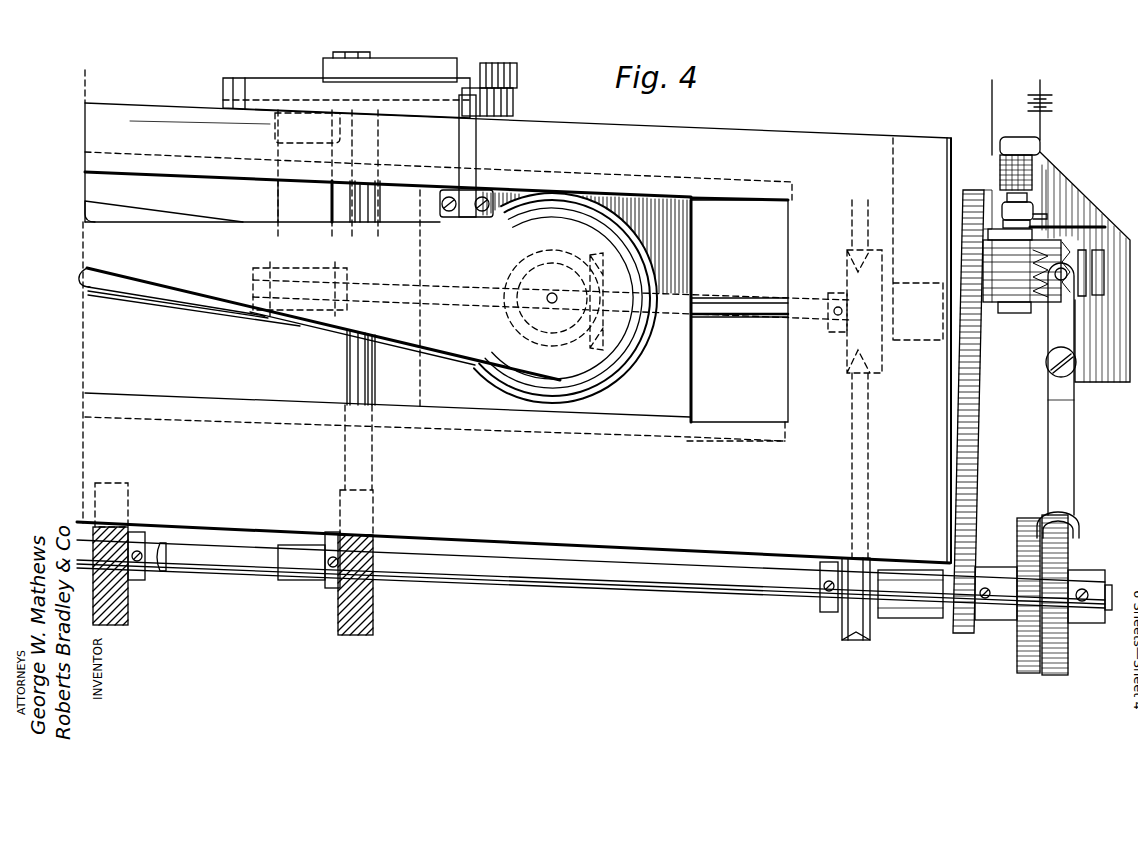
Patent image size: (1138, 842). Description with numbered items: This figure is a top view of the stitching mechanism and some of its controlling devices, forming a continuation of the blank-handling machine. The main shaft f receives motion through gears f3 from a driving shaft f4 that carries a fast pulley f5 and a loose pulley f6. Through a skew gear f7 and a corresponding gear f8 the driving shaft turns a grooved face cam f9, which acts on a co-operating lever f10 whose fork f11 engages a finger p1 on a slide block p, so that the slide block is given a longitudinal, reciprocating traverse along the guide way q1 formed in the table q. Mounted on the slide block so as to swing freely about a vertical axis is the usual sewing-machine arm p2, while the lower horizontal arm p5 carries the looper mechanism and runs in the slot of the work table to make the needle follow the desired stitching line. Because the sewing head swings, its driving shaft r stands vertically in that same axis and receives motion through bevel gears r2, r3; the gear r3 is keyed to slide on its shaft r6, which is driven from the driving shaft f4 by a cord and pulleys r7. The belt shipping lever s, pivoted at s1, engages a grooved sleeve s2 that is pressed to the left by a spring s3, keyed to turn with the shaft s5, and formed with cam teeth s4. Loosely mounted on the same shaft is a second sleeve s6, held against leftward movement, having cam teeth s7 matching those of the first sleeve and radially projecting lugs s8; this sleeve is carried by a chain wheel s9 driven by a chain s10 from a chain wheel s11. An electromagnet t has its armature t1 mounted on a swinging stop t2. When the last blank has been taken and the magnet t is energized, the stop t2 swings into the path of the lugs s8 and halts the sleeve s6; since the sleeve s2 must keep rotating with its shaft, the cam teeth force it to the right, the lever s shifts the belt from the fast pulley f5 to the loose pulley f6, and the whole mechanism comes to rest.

The main shaft f is at (161, 573).
The gears f3 is at (120, 626).
The driving shaft f4 is at (543, 584).
The fast pulley f5 is at (1050, 670).
The loose pulley f6 is at (1017, 660).
The skew gear f7 is at (375, 612).
The corresponding gear f8 is at (291, 582).
The grooved face cam f9 is at (284, 78).
The lever f10 is at (428, 66).
The fork f11 is at (488, 68).
The slide block p is at (739, 310).
The finger p1 is at (479, 130).
The arm p2 is at (696, 343).
The lower horizontal arm p5 is at (134, 292).
The table q is at (514, 316).
The guide way q1 is at (740, 422).
The driving shaft of the sewing mechanism r is at (530, 290).
The bevel gear r2 is at (518, 325).
The bevel gear r3 is at (590, 336).
The shaft r6 is at (735, 305).
The cord and pulleys r7 is at (870, 450).
The belt shipping lever s is at (1061, 389).
The pivot s1 is at (1052, 372).
The grooved sleeve s2 is at (1088, 250).
The spring s3 is at (1100, 298).
The cam teeth s4 is at (1064, 250).
The shaft s5 is at (998, 314).
The second sleeve s6 is at (985, 275).
The cam teeth s7 is at (1040, 305).
The radially projecting lugs s8 is at (1007, 355).
The chain wheel s9 is at (973, 216).
The chain s10 is at (986, 422).
The chain wheel s11 is at (955, 630).
The electromagnet t is at (1036, 174).
The armature t1 is at (1026, 210).
The swinging stop t2 is at (1042, 224).